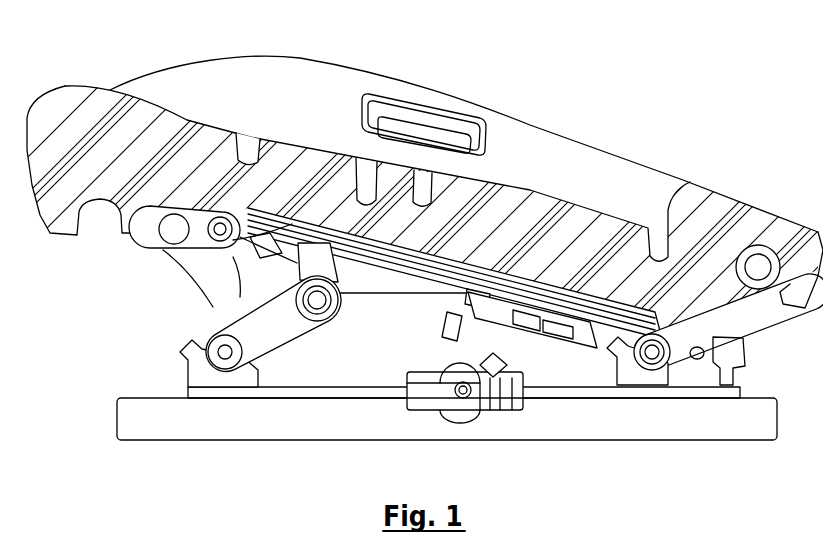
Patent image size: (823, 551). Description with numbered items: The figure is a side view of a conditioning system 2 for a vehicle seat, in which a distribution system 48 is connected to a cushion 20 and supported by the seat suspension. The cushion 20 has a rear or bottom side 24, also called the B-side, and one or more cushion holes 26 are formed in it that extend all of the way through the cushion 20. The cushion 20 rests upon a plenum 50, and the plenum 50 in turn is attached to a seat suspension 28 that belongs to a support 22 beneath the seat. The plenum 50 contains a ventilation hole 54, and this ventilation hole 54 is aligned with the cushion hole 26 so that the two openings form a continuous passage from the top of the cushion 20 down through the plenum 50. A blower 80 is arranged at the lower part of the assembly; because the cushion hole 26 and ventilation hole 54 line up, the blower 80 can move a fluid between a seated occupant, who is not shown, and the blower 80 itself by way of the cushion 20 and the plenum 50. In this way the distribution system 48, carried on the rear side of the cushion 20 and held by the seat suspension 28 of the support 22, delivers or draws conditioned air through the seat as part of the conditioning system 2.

The conditioning system 2 is at (641, 89).
The cushion 20 is at (60, 100).
The support 22 is at (765, 421).
The rear or bottom side 24 is at (143, 319).
The cushion hole 26 is at (372, 200).
The seat suspension 28 is at (700, 318).
The distribution system 48 is at (197, 265).
The plenum 50 is at (292, 222).
The ventilation hole 54 is at (378, 238).
The blower 80 is at (563, 333).